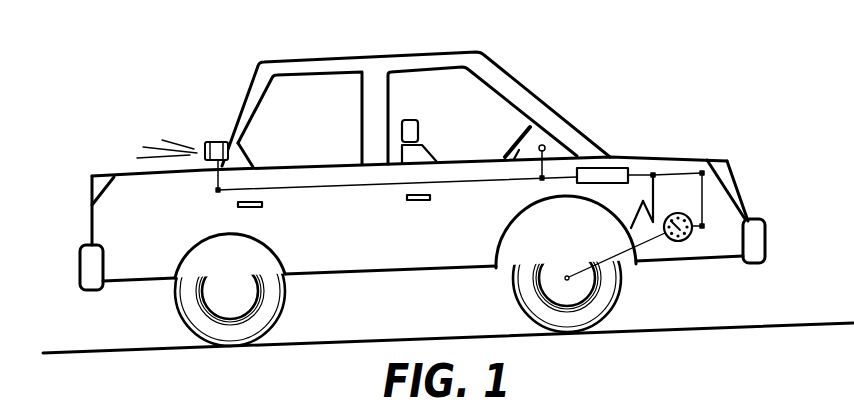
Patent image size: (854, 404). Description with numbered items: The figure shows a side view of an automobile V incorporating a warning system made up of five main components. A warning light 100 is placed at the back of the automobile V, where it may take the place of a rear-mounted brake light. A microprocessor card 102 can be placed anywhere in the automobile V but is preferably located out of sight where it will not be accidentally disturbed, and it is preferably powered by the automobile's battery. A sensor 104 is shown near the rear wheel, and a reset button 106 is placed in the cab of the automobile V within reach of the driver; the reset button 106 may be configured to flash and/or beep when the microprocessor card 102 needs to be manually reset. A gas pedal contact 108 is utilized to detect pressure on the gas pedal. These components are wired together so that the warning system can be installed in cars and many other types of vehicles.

The automobile V is at (551, 37).
The warning light 100 is at (205, 143).
The microprocessor card 102 is at (606, 168).
The sensor 104 is at (686, 239).
The reset button 106 is at (546, 147).
The gas pedal contact 108 is at (643, 201).